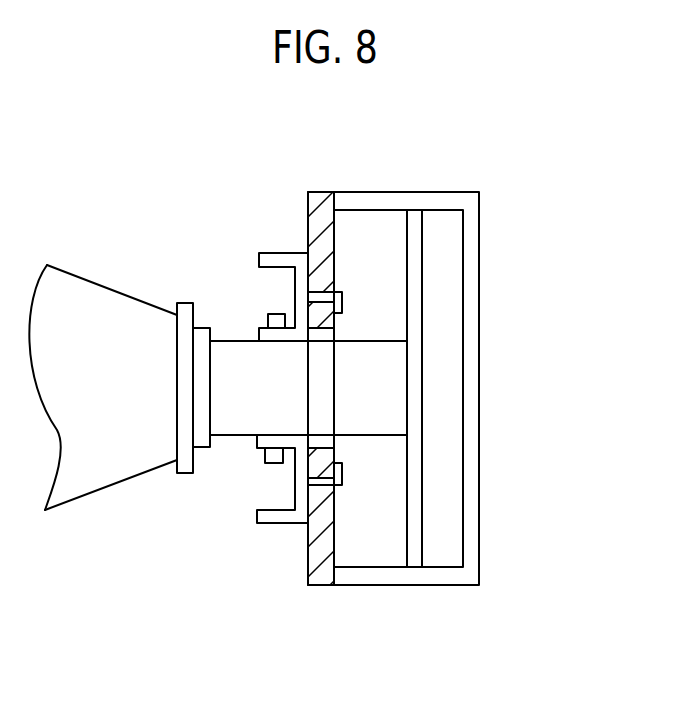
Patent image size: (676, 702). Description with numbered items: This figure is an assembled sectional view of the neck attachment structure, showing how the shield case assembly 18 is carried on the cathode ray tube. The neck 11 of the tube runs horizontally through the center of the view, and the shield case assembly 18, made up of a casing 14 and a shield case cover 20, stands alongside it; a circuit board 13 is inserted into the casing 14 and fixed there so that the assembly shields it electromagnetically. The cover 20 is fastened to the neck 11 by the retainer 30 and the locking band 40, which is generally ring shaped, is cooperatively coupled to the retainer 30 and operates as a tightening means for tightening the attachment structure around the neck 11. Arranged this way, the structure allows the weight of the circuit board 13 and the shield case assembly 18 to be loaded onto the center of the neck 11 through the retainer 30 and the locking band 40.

The neck 11 is at (245, 423).
The circuit board 13 is at (417, 332).
The casing 14 is at (473, 447).
The shield case assembly 18 is at (365, 598).
The shield case cover 20 is at (322, 200).
The retainer 30 is at (280, 258).
The locking band 40 is at (268, 318).